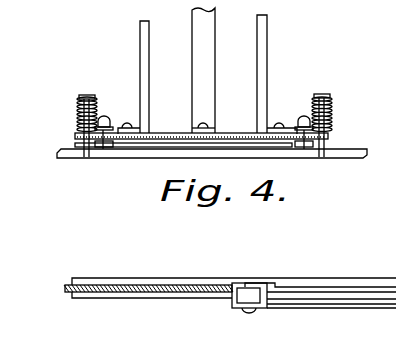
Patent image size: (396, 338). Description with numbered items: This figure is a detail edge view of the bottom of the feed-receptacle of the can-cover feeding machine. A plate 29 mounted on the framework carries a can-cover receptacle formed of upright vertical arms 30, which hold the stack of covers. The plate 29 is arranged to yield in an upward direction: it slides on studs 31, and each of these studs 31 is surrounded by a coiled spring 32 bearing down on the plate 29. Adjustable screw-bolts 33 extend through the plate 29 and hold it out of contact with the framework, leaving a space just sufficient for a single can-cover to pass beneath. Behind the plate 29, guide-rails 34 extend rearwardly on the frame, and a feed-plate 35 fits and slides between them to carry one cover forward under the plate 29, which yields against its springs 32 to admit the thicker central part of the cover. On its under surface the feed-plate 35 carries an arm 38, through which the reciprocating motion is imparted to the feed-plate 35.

The plate 29 is at (328, 136).
The vertical arms 30 is at (192, 62).
The studs 31 is at (87, 95).
The coiled springs 32 is at (78, 120).
The adjustable screw-bolts 33 is at (105, 117).
The guide-rails 34 is at (207, 298).
The feed-plate 35 is at (128, 148).
The arm 38 is at (372, 304).